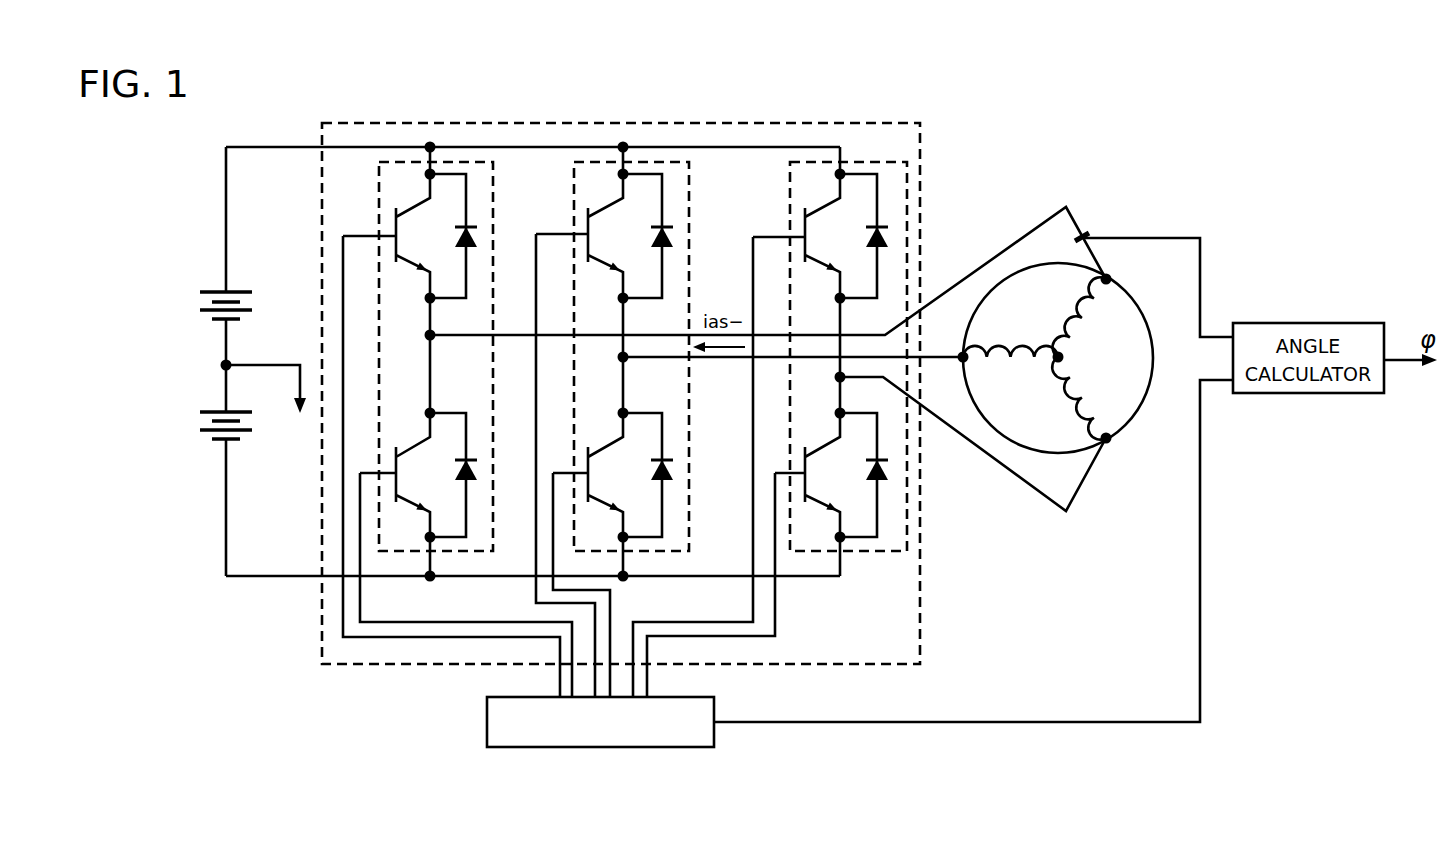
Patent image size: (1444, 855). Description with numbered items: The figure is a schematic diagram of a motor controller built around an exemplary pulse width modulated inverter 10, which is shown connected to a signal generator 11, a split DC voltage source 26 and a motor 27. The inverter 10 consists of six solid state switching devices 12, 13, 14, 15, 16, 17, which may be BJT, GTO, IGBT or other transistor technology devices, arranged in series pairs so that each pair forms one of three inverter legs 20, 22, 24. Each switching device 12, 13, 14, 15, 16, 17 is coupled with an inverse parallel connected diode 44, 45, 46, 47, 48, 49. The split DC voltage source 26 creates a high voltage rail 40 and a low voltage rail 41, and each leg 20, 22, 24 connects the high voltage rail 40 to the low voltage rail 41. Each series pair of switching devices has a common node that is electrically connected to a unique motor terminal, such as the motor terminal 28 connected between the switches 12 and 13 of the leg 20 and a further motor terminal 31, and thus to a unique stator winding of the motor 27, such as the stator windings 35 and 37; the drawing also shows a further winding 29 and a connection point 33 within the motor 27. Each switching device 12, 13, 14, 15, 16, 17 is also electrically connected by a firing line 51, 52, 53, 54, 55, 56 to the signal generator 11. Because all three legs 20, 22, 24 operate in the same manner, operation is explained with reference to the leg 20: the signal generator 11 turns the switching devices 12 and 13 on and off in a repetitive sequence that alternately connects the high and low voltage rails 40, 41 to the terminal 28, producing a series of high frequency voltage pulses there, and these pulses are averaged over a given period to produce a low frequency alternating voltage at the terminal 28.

The inverter 10 is at (403, 123).
The signal generator 11 is at (487, 713).
The switching device 12 is at (458, 200).
The switching device 13 is at (447, 420).
The switching device 14 is at (652, 200).
The switching device 15 is at (642, 425).
The switching device 16 is at (870, 195).
The switching device 17 is at (848, 436).
The inverter leg 20 is at (400, 188).
The inverter leg 22 is at (598, 188).
The inverter leg 24 is at (810, 191).
The DC voltage source 26 is at (206, 206).
The motor 27 is at (1142, 288).
The motor terminal 28 is at (1110, 264).
The stator winding 29 is at (975, 346).
The motor terminal 31 is at (1112, 445).
The stator winding 33 is at (1096, 320).
The stator winding 35 is at (1092, 374).
The stator winding 37 is at (1018, 364).
The high voltage rail 40 is at (275, 147).
The low voltage rail 41 is at (245, 570).
The inverse parallel connected diode 44 is at (456, 240).
The inverse parallel connected diode 45 is at (456, 477).
The inverse parallel connected diode 46 is at (651, 240).
The inverse parallel connected diode 47 is at (651, 474).
The inverse parallel connected diode 48 is at (867, 241).
The inverse parallel connected diode 49 is at (867, 477).
The firing line 51 is at (372, 635).
The firing line 52 is at (440, 621).
The firing line 53 is at (536, 512).
The firing line 54 is at (610, 620).
The firing line 55 is at (753, 603).
The firing line 56 is at (775, 615).